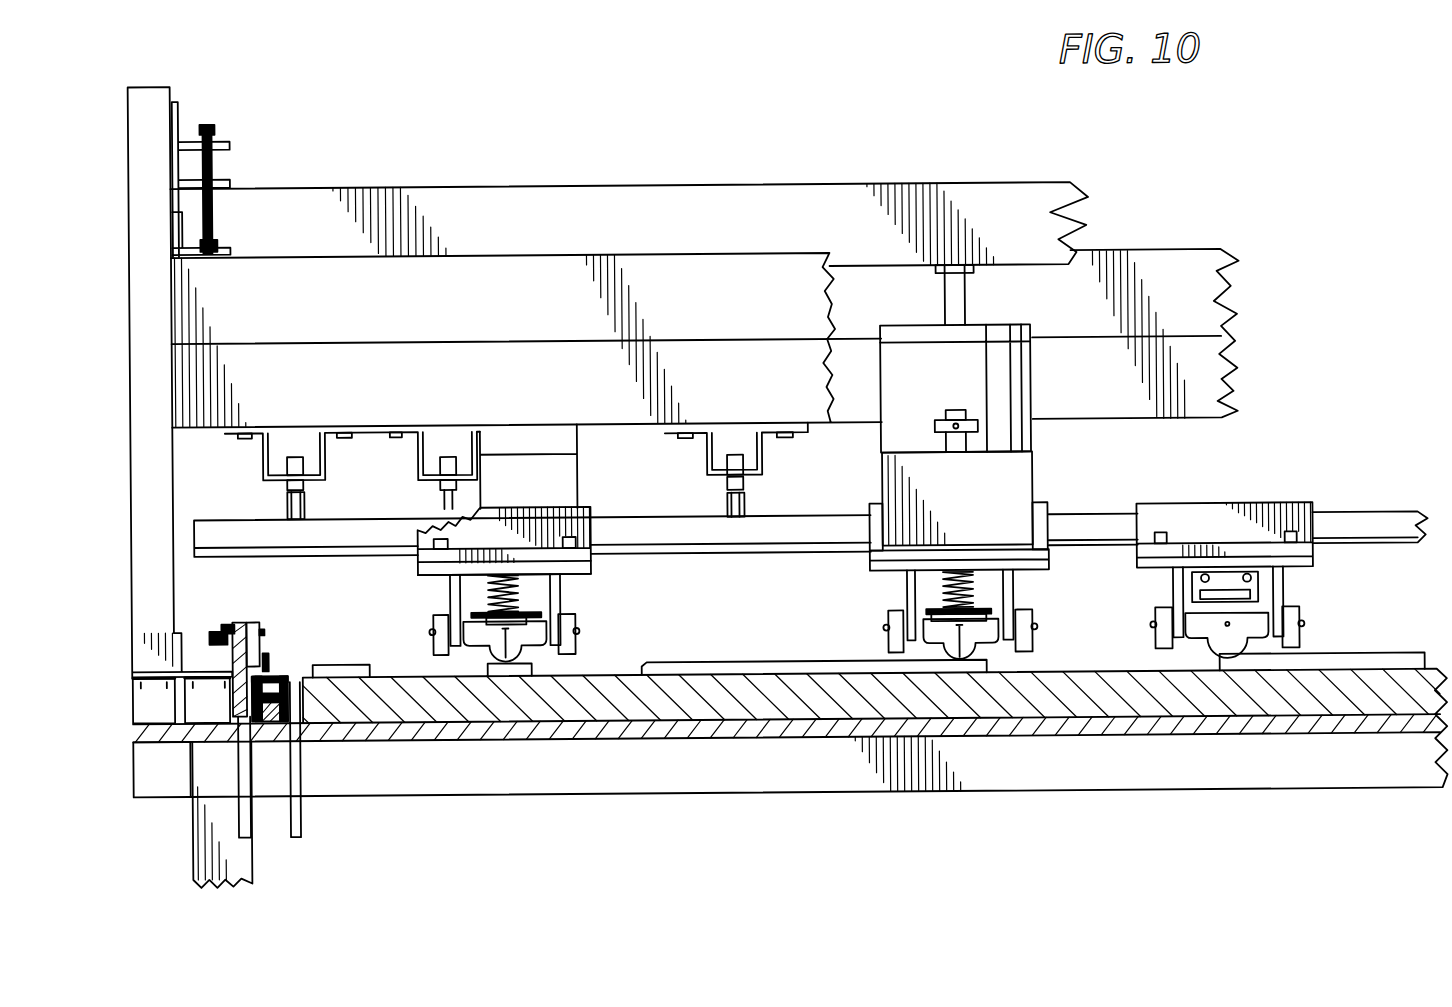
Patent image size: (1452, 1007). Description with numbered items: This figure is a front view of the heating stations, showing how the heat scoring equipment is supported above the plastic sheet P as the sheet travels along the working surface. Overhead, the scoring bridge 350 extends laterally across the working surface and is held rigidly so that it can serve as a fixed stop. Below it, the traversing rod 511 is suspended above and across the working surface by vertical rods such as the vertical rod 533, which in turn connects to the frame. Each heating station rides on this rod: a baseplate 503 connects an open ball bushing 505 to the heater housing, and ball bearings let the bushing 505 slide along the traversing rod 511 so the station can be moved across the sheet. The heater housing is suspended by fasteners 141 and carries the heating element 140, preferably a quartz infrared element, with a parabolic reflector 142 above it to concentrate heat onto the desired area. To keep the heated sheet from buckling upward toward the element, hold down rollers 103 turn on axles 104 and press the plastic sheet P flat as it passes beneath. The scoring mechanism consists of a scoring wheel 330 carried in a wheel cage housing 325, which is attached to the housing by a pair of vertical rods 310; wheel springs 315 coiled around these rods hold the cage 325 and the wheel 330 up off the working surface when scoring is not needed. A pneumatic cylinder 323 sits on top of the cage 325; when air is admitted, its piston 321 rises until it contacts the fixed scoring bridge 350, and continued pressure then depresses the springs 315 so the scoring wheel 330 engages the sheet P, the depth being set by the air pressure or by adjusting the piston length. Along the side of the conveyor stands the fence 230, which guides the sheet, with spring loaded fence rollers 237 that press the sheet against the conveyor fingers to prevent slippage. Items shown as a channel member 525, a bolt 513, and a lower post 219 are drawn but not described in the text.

The scoring bridge 350 is at (976, 194).
The vertical rod 533 is at (668, 275).
The piston 321 is at (956, 312).
The vertical rod 310 is at (956, 411).
The pneumatic cylinder 323 is at (566, 444).
The wheel cage housing 325 is at (566, 471).
The channel 525 is at (326, 452).
The bolt 513 is at (305, 485).
The open ball bushing 505 is at (568, 512).
The traversing rod 511 is at (676, 541).
The baseplate 503 is at (579, 566).
The wheel spring 315 is at (487, 598).
The reflector 142 is at (537, 636).
The hold down roller 103 is at (572, 632).
The axle 104 is at (886, 628).
The heating element 140 is at (488, 640).
The scoring wheel 330 is at (506, 646).
The fastener 141 is at (1255, 585).
The fence 230 is at (238, 625).
The fence roller 237 is at (266, 661).
The post 219 is at (275, 720).
The plastic sheet P is at (360, 661).